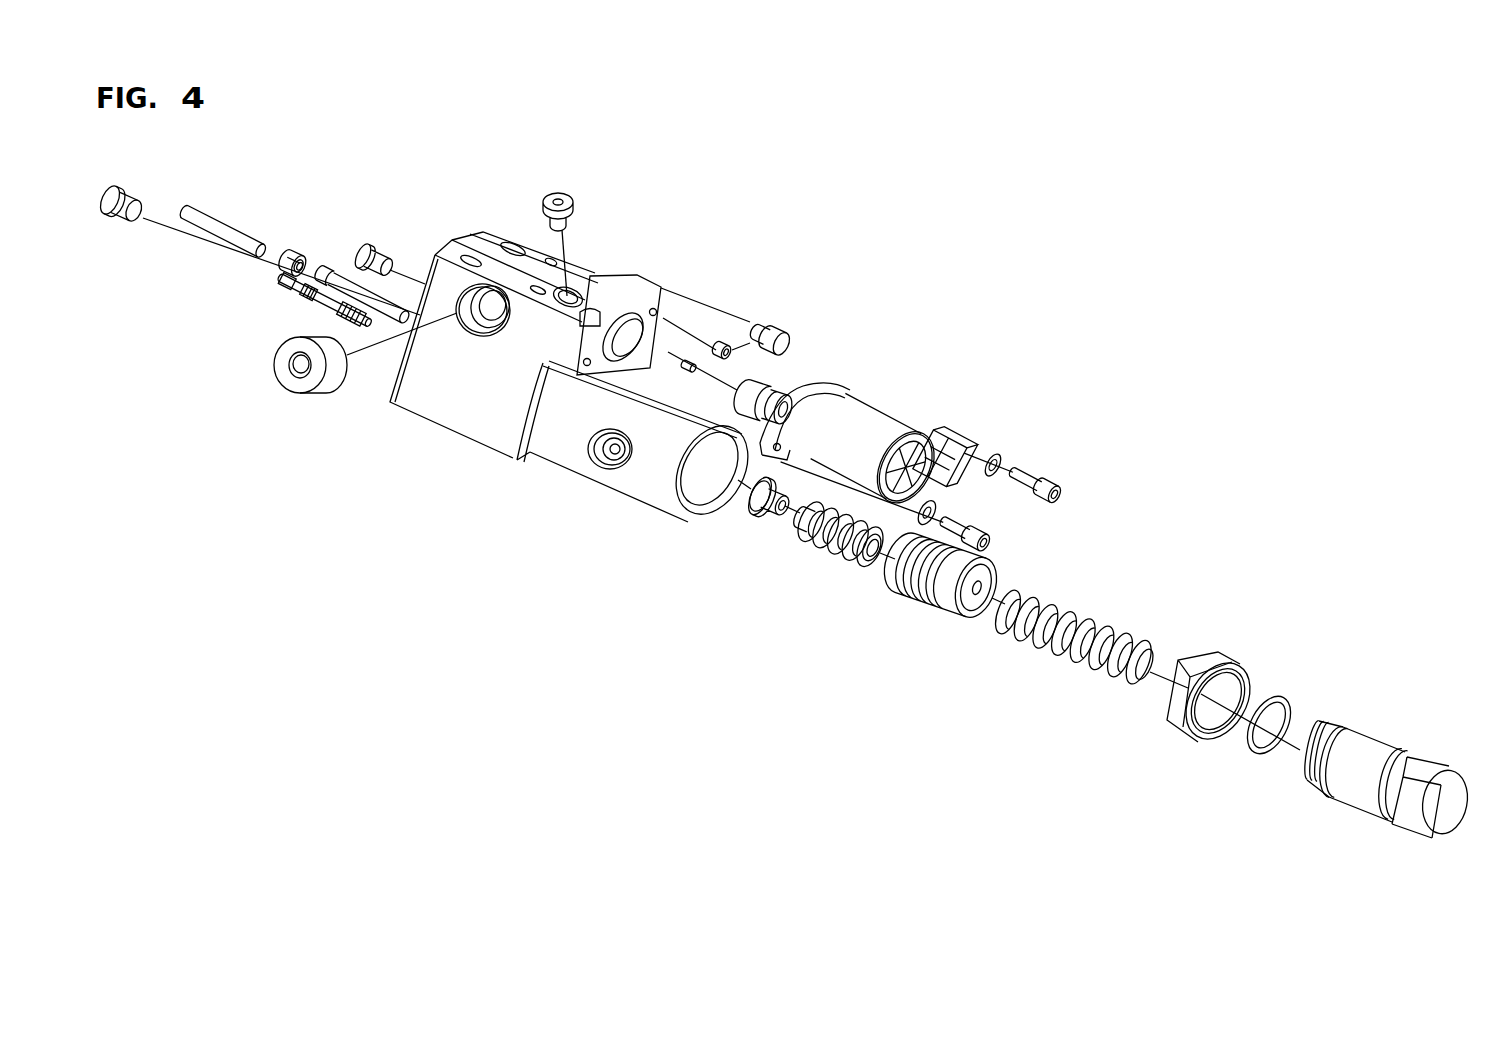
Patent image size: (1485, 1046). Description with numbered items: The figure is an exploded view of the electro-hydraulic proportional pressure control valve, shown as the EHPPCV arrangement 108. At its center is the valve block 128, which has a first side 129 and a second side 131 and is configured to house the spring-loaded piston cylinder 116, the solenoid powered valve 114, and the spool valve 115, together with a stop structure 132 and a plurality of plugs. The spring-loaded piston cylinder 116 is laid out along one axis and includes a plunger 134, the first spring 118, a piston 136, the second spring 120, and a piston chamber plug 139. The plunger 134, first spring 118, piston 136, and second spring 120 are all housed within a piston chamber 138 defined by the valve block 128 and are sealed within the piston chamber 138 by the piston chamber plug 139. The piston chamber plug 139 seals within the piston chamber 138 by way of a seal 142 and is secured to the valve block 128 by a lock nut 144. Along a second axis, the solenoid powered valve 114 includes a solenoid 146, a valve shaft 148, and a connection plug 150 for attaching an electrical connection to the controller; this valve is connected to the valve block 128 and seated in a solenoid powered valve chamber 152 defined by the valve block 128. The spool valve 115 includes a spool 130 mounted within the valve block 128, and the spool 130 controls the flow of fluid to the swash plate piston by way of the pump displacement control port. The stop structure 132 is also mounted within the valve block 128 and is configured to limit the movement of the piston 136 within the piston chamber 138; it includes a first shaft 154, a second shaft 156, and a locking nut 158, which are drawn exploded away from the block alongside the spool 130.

The EHPPCV arrangement 108 is at (1158, 183).
The solenoid powered valve 114 is at (867, 377).
The spool valve 115 is at (315, 312).
The spring-loaded piston cylinder 116 is at (773, 590).
The first spring 118 is at (847, 545).
The second spring 120 is at (1047, 642).
The valve block 128 is at (452, 283).
The first side 129 is at (352, 443).
The spool 130 is at (290, 297).
The second side 131 is at (622, 627).
The stop structure 132 is at (315, 238).
The plunger 134 is at (763, 505).
The piston 136 is at (900, 583).
The piston chamber 138 is at (705, 482).
The piston chamber plug 139 is at (1357, 783).
The seal 142 is at (1284, 696).
The lock nut 144 is at (1201, 664).
The solenoid 146 is at (872, 427).
The valve shaft 148 is at (750, 390).
The connection plug 150 is at (957, 447).
The solenoid powered valve chamber 152 is at (627, 325).
The first shaft 154 is at (339, 278).
The second shaft 156 is at (238, 232).
The locking nut 158 is at (294, 252).